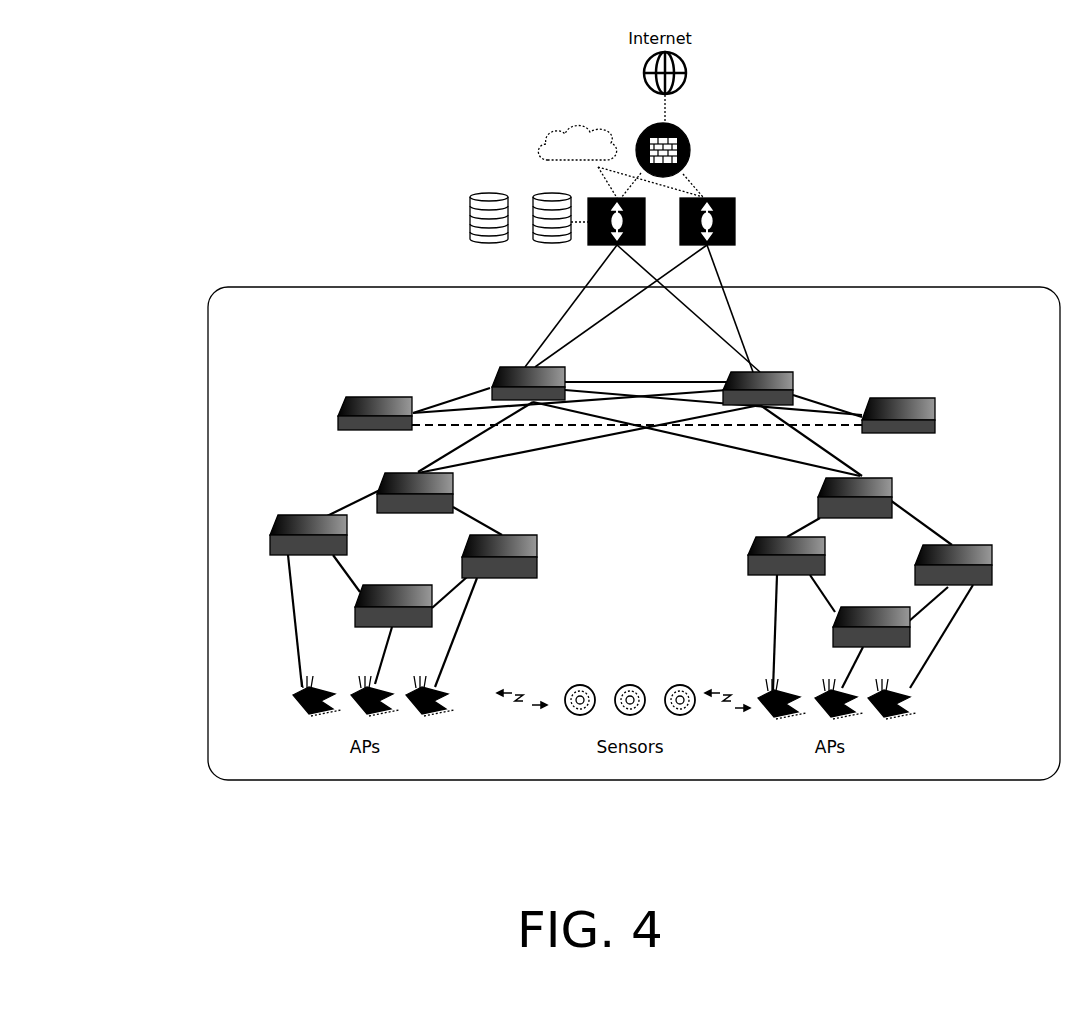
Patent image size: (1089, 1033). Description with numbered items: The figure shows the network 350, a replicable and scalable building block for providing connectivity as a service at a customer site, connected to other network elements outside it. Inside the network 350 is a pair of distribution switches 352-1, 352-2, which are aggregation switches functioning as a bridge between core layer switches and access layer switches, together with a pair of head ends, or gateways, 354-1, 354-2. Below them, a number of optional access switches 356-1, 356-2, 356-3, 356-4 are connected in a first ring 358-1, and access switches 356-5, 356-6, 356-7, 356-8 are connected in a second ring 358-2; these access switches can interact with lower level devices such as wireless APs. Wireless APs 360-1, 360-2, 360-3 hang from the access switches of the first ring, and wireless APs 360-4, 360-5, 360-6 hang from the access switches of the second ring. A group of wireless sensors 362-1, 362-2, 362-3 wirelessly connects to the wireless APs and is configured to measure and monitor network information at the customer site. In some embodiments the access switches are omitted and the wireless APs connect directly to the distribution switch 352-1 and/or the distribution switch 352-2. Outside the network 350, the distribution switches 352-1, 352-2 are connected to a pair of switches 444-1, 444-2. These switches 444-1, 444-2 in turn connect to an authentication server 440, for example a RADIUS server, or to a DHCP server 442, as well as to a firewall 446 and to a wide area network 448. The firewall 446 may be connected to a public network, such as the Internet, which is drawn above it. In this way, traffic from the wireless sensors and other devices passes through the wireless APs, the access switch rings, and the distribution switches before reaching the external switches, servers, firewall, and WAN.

The network 350 is at (634, 533).
The distribution switch 352-1 is at (494, 367).
The distribution switch 352-2 is at (796, 369).
The head end 354-1 is at (339, 412).
The head end 354-2 is at (930, 411).
The access switch 356-1 is at (383, 474).
The access switch 356-2 is at (278, 515).
The access switch 356-3 is at (356, 609).
The access switch 356-4 is at (536, 558).
The access switch 356-5 is at (892, 489).
The access switch 356-6 is at (748, 549).
The access switch 356-7 is at (833, 635).
The access switch 356-8 is at (992, 556).
The ring 358-1 is at (402, 547).
The ring 358-2 is at (868, 548).
The wireless AP 360-1 is at (294, 692).
The wireless AP 360-2 is at (356, 692).
The wireless AP 360-3 is at (444, 694).
The wireless AP 360-4 is at (761, 715).
The wireless AP 360-5 is at (818, 691).
The wireless AP 360-6 is at (914, 705).
The wireless sensor 362-1 is at (579, 685).
The wireless sensor 362-2 is at (631, 685).
The wireless sensor 362-3 is at (681, 685).
The authentication server 440 is at (477, 194).
The DHCP server 442 is at (539, 194).
The switch 444-1 is at (658, 200).
The switch 444-2 is at (735, 214).
The firewall 446 is at (687, 142).
The WAN 448 is at (572, 124).